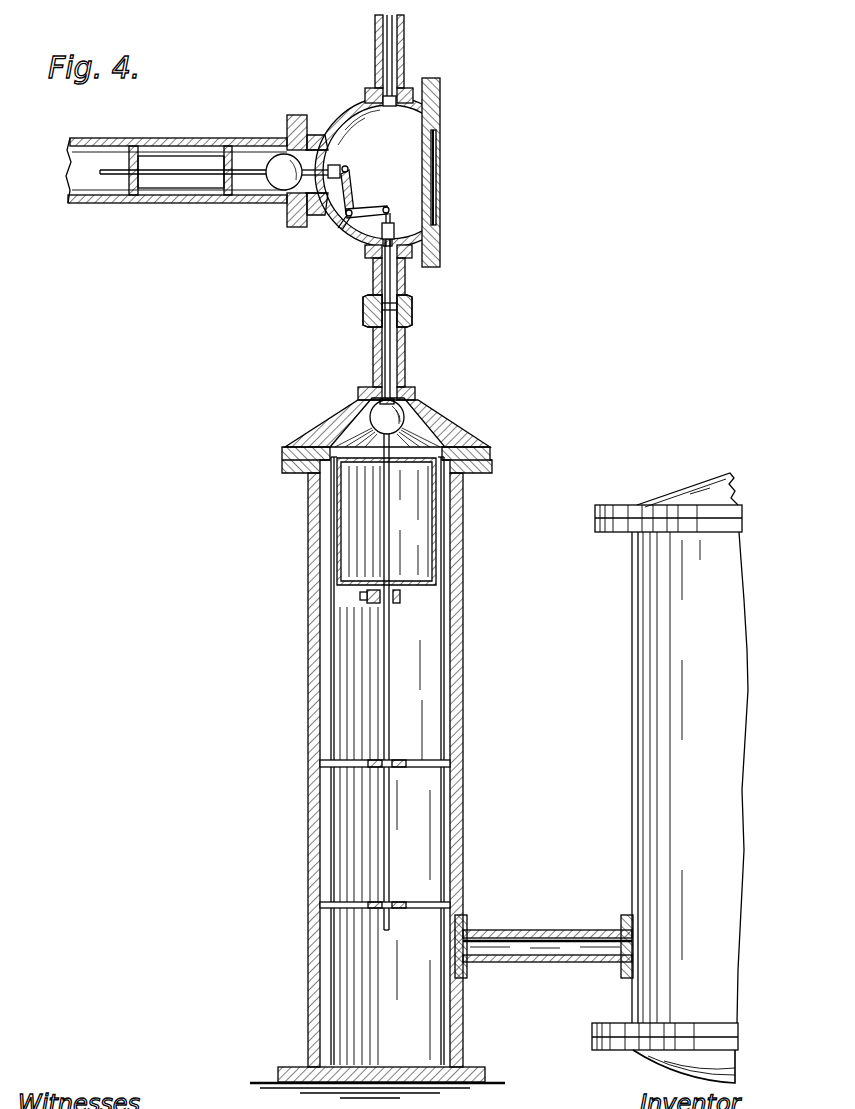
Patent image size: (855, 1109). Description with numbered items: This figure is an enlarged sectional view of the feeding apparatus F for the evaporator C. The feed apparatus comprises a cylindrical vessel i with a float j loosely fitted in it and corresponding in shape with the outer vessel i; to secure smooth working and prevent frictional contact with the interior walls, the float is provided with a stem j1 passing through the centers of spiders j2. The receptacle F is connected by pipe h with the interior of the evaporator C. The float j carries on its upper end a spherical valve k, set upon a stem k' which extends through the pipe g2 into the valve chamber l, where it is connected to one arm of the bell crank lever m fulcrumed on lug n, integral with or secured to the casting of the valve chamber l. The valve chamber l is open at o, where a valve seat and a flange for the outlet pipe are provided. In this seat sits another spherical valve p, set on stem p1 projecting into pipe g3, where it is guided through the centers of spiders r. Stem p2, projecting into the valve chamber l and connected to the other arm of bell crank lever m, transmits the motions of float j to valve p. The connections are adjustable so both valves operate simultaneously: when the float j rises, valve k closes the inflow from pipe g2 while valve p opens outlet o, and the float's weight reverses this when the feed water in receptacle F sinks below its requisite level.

The pipe g3 is at (96, 143).
The spiders r is at (132, 160).
The stem p1 is at (160, 170).
The spherical valve p is at (278, 183).
The pipe g2 is at (400, 60).
The valve chamber l is at (390, 172).
The opening o is at (337, 161).
The stem p2 is at (350, 171).
The bell crank lever m is at (366, 210).
The lug n is at (345, 216).
The stem k' is at (415, 317).
The spherical valve k is at (405, 416).
The float j is at (386, 530).
The feed water receptacle F is at (330, 632).
The cylindrical vessel i is at (457, 672).
The spiders j2 is at (398, 760).
The stem j1 is at (390, 803).
The pipe h is at (517, 933).
The evaporator C is at (645, 686).